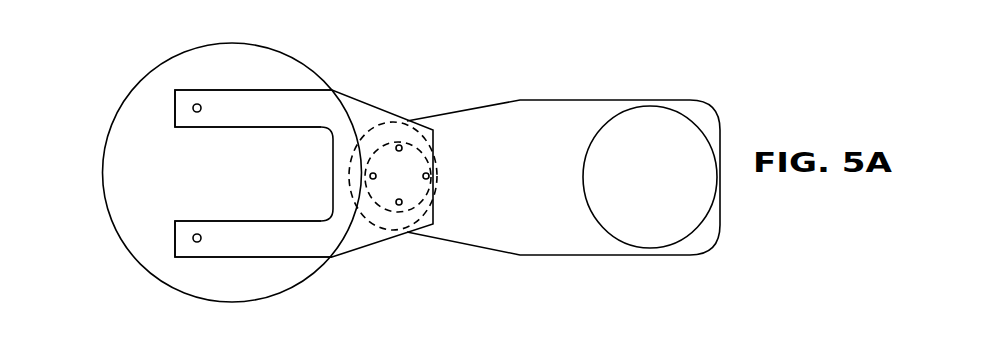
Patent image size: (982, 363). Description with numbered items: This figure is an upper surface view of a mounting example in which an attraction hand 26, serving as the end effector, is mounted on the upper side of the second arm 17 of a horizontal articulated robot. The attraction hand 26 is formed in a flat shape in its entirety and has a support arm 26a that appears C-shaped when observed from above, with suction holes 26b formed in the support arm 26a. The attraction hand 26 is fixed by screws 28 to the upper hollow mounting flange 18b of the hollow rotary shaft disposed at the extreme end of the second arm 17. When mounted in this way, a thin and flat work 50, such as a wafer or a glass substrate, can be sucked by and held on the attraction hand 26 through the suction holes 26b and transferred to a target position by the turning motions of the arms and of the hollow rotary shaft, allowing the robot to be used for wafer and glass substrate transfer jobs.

The second arm 17 is at (575, 115).
The upper hollow mounting flange 18b is at (447, 120).
The attraction hand 26 is at (378, 112).
The support arm 26a is at (305, 91).
The suction holes 26b is at (194, 240).
The screws 28 is at (428, 178).
The work 50 is at (127, 97).